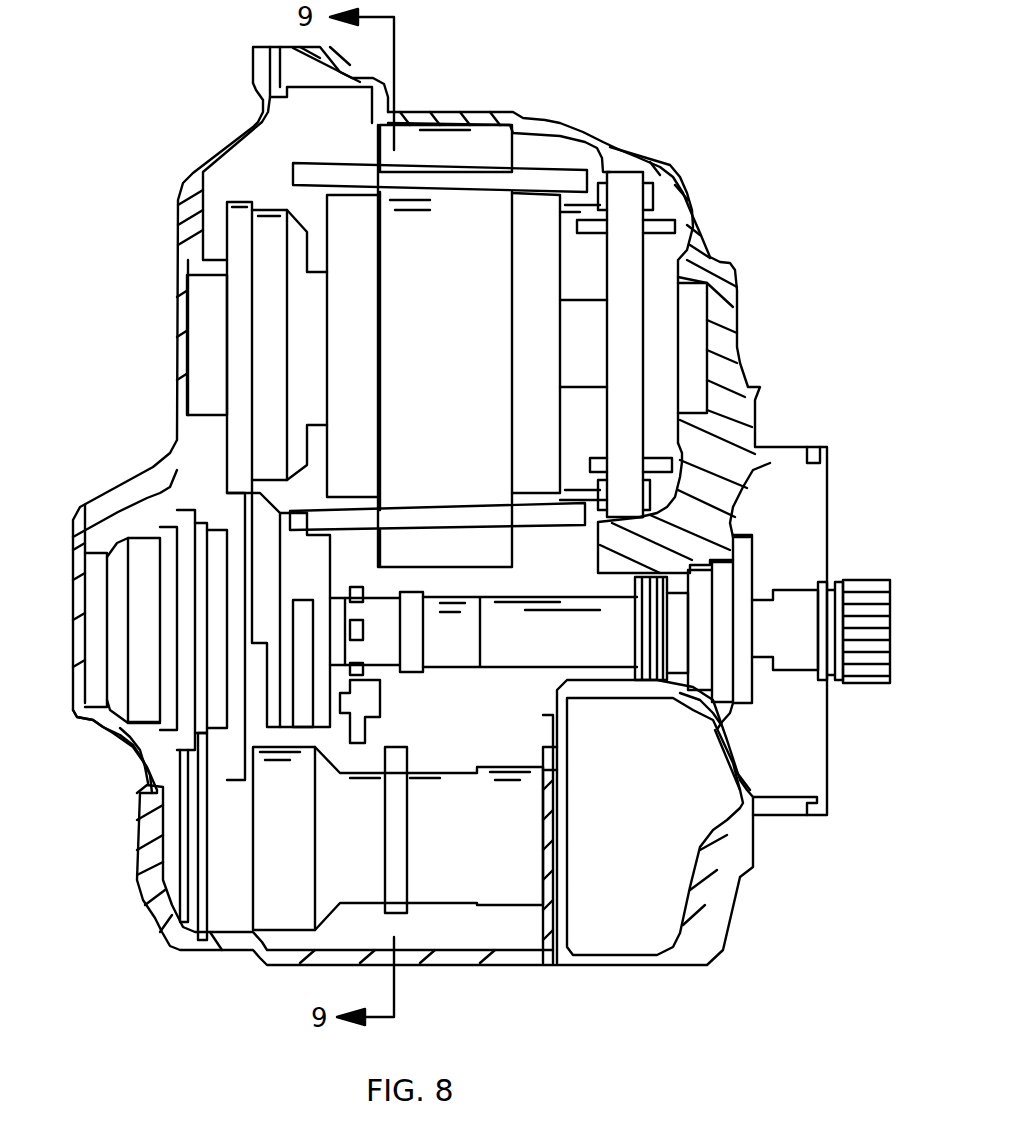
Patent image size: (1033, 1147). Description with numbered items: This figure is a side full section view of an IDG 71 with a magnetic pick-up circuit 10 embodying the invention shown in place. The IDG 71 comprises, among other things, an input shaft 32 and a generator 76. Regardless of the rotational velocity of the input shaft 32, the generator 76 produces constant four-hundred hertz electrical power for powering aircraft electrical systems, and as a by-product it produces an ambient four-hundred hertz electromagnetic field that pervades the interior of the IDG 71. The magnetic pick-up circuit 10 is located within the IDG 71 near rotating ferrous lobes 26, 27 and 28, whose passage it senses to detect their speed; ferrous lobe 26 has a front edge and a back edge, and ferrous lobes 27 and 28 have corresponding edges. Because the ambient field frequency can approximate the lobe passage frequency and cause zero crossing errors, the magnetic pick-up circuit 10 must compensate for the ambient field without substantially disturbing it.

The magnetic pick-up circuit 10 is at (353, 732).
The ferrous lobe 26 is at (365, 668).
The ferrous lobe 27 is at (365, 628).
The ferrous lobe 28 is at (365, 592).
The input shaft 32 is at (523, 653).
The IDG 71 is at (703, 237).
The generator 76 is at (397, 267).